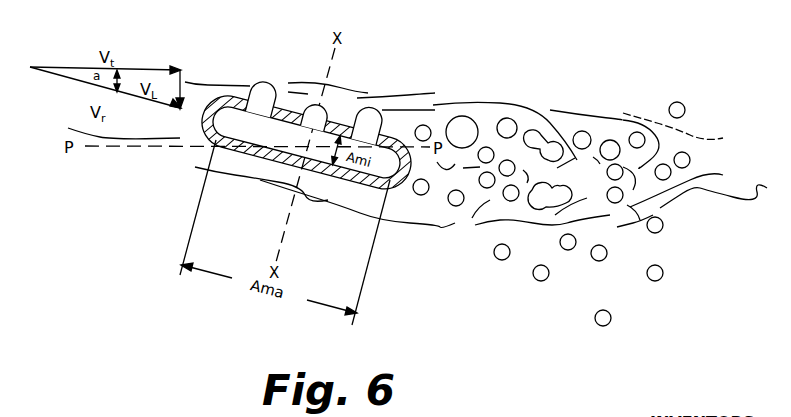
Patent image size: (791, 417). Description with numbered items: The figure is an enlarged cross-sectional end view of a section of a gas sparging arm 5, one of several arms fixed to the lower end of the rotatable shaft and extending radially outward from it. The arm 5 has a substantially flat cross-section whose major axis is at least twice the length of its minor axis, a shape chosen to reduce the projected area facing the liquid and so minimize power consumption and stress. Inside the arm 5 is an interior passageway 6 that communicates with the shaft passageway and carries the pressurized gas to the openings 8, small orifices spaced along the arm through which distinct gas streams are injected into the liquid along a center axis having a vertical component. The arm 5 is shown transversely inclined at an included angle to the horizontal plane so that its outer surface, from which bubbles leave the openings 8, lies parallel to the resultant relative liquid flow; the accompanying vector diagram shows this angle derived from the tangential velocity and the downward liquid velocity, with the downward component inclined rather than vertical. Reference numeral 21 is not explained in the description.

The abrasive element body 21 is at (213, 118).
The gas sparging arm 5 is at (229, 104).
The interior passageway 6 is at (237, 117).
The openings 8 is at (267, 92).